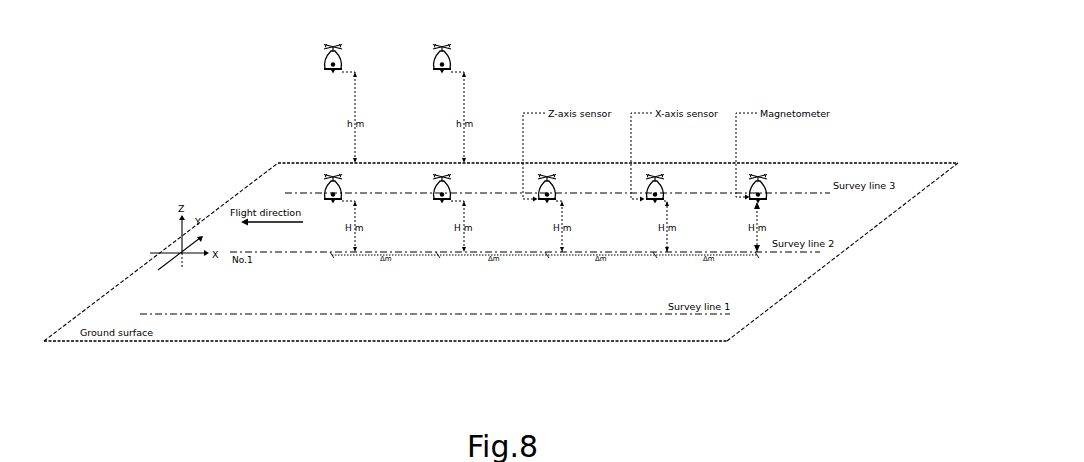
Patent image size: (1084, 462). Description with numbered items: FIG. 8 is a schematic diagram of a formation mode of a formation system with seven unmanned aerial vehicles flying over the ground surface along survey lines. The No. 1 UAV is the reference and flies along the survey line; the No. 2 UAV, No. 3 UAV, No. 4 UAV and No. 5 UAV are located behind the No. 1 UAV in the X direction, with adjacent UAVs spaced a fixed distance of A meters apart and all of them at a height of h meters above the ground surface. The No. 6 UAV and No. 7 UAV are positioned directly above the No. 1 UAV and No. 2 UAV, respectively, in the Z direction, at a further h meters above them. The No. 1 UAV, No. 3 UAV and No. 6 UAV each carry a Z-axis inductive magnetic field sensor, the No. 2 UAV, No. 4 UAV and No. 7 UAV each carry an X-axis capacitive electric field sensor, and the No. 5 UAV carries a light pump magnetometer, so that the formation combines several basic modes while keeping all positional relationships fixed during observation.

The No. 1 UAV 1 is at (317, 185).
The No. 2 UAV 2 is at (427, 185).
The No. 3 UAV 3 is at (560, 186).
The No. 4 UAV 4 is at (668, 186).
The No. 5 UAV 5 is at (771, 186).
The No. 6 UAV 6 is at (322, 54).
The No. 7 UAV 7 is at (434, 54).